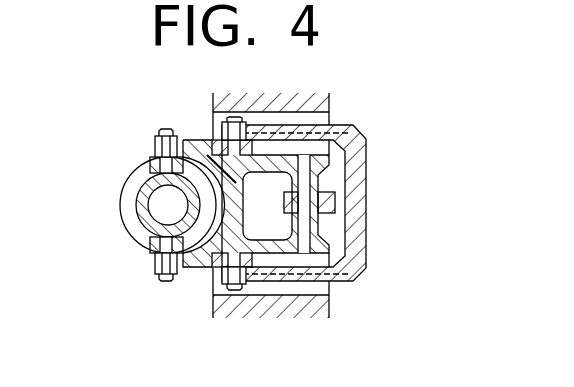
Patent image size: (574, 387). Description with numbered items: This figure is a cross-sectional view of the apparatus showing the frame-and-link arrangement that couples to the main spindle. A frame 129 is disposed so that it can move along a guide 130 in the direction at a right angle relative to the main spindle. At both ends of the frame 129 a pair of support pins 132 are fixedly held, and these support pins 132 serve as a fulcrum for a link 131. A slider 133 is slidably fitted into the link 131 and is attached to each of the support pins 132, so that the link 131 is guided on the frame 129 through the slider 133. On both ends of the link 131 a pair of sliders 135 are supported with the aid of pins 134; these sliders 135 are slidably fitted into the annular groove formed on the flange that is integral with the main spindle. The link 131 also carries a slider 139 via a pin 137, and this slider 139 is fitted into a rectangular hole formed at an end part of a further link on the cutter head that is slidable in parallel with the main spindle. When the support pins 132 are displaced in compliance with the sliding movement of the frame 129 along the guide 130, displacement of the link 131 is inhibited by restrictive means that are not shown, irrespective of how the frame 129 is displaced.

The frame 129 is at (364, 162).
The guide 130 is at (306, 116).
The link 131 is at (192, 268).
The support pins 132 is at (217, 124).
The slider 133 is at (210, 142).
The pins 134 is at (155, 138).
The sliders 135 is at (150, 163).
The pin 137 is at (315, 233).
The slider 139 is at (335, 203).